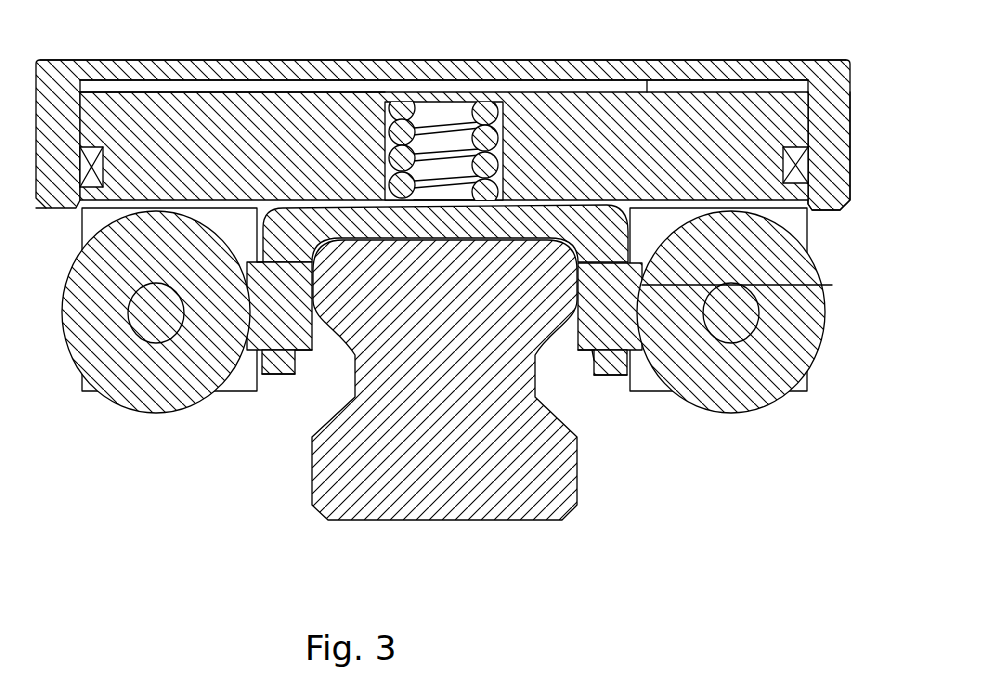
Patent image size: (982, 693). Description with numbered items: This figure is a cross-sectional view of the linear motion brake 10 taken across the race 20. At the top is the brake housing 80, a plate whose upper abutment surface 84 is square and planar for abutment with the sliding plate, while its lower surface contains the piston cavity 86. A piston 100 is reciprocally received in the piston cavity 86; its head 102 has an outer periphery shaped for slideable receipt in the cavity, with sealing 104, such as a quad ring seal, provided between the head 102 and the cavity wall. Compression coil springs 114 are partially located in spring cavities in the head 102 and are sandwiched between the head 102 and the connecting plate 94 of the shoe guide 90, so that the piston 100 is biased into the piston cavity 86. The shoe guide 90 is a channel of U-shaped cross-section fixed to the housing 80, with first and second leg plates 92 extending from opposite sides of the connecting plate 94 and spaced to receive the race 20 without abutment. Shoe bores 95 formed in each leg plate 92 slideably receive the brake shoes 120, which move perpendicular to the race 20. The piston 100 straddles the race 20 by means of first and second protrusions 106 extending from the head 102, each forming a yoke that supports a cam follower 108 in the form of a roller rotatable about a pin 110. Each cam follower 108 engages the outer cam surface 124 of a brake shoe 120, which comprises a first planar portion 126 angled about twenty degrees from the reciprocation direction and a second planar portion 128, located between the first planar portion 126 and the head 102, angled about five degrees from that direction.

The brake 10 is at (250, 548).
The race 20 is at (452, 520).
The brake housing 80 is at (753, 58).
The upper abutment surface 84 is at (307, 60).
The piston cavity 86 is at (178, 87).
The shoe guide 90 is at (597, 380).
The leg plates 92 is at (279, 375).
The connecting plate 94 is at (577, 234).
The shoe bores 95 is at (257, 262).
The piston 100 is at (101, 90).
The head 102 is at (580, 137).
The sealing 104 is at (812, 212).
The protrusions 106 is at (237, 380).
The cam follower 108 is at (117, 378).
The pin 110 is at (140, 305).
The compression coil springs 114 is at (485, 108).
The brake shoes 120 is at (302, 354).
The outer cam surface 124 is at (444, 322).
The first planar portion 126 is at (255, 376).
The second planar portion 128 is at (761, 286).